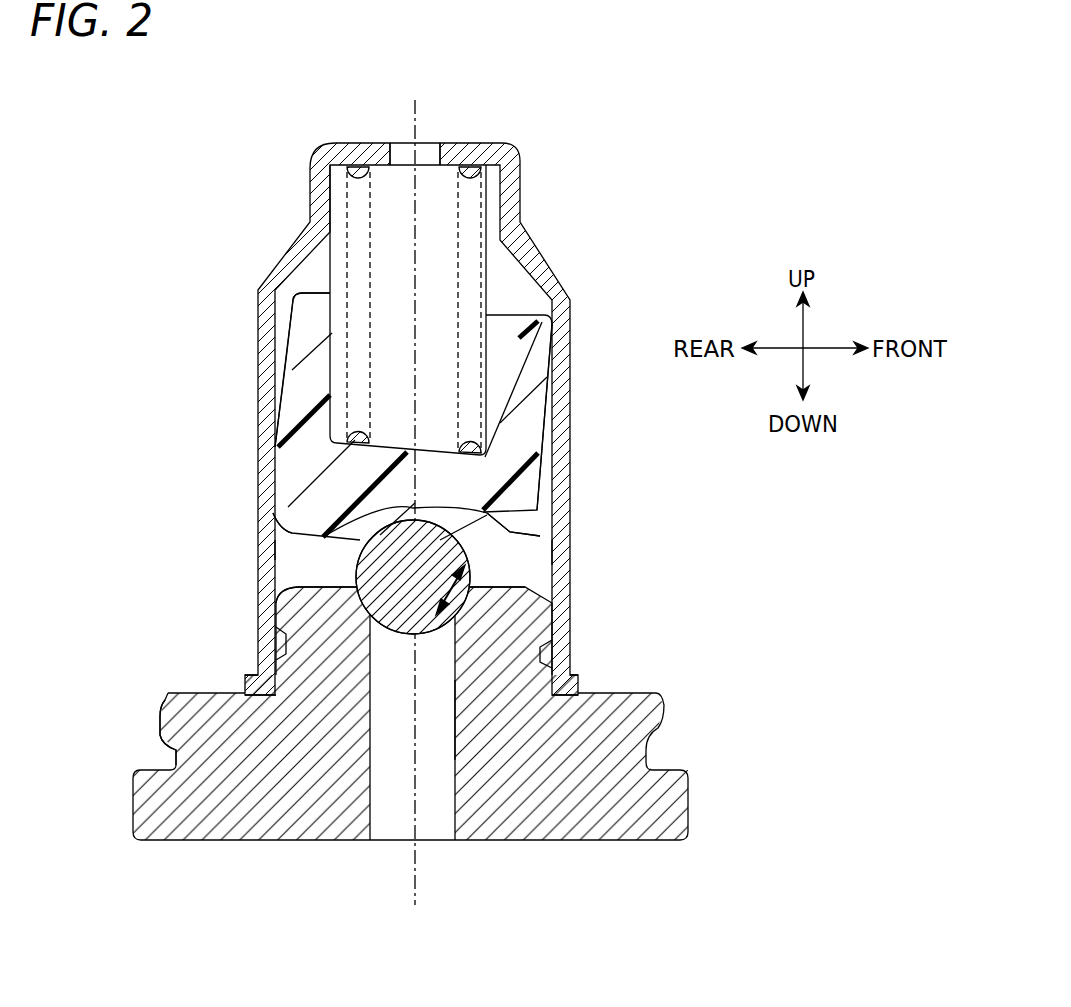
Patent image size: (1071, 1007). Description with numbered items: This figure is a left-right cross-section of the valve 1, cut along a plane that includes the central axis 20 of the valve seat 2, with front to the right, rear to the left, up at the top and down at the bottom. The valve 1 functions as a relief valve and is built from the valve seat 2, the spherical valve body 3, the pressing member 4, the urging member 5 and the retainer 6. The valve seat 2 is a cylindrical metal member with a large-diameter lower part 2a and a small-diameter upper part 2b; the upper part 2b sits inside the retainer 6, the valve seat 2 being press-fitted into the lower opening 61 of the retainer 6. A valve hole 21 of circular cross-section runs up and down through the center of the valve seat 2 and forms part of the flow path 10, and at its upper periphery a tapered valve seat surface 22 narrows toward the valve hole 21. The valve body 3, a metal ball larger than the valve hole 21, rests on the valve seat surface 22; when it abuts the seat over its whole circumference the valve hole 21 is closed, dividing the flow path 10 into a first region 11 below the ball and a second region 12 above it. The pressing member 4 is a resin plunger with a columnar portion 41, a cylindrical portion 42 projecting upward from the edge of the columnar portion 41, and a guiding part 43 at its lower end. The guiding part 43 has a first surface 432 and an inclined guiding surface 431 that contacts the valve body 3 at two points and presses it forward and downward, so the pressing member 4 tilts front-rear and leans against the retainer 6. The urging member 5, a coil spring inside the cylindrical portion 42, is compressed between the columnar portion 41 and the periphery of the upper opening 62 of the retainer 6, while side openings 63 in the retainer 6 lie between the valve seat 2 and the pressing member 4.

The valve 1 is at (148, 103).
The valve seat 2 is at (653, 725).
The lower part 2a is at (190, 730).
The upper part 2b is at (293, 663).
The valve body 3 is at (452, 607).
The pressing member 4 is at (302, 327).
The urging member 5 is at (348, 263).
The retainer 6 is at (513, 205).
The flow path 10 is at (260, 598).
The first region 11 is at (437, 762).
The second region 12 is at (303, 560).
The central axis 20 is at (431, 875).
The valve hole 21 is at (393, 822).
The valve seat surface 22 is at (355, 572).
The columnar portion 41 is at (305, 462).
The cylindrical portion 42 is at (300, 368).
The guiding part 43 is at (308, 517).
The guiding surface 431 is at (485, 542).
The first surface 432 is at (560, 518).
The lower opening 61 is at (262, 693).
The opening 62 is at (431, 147).
The openings 63 is at (263, 550).